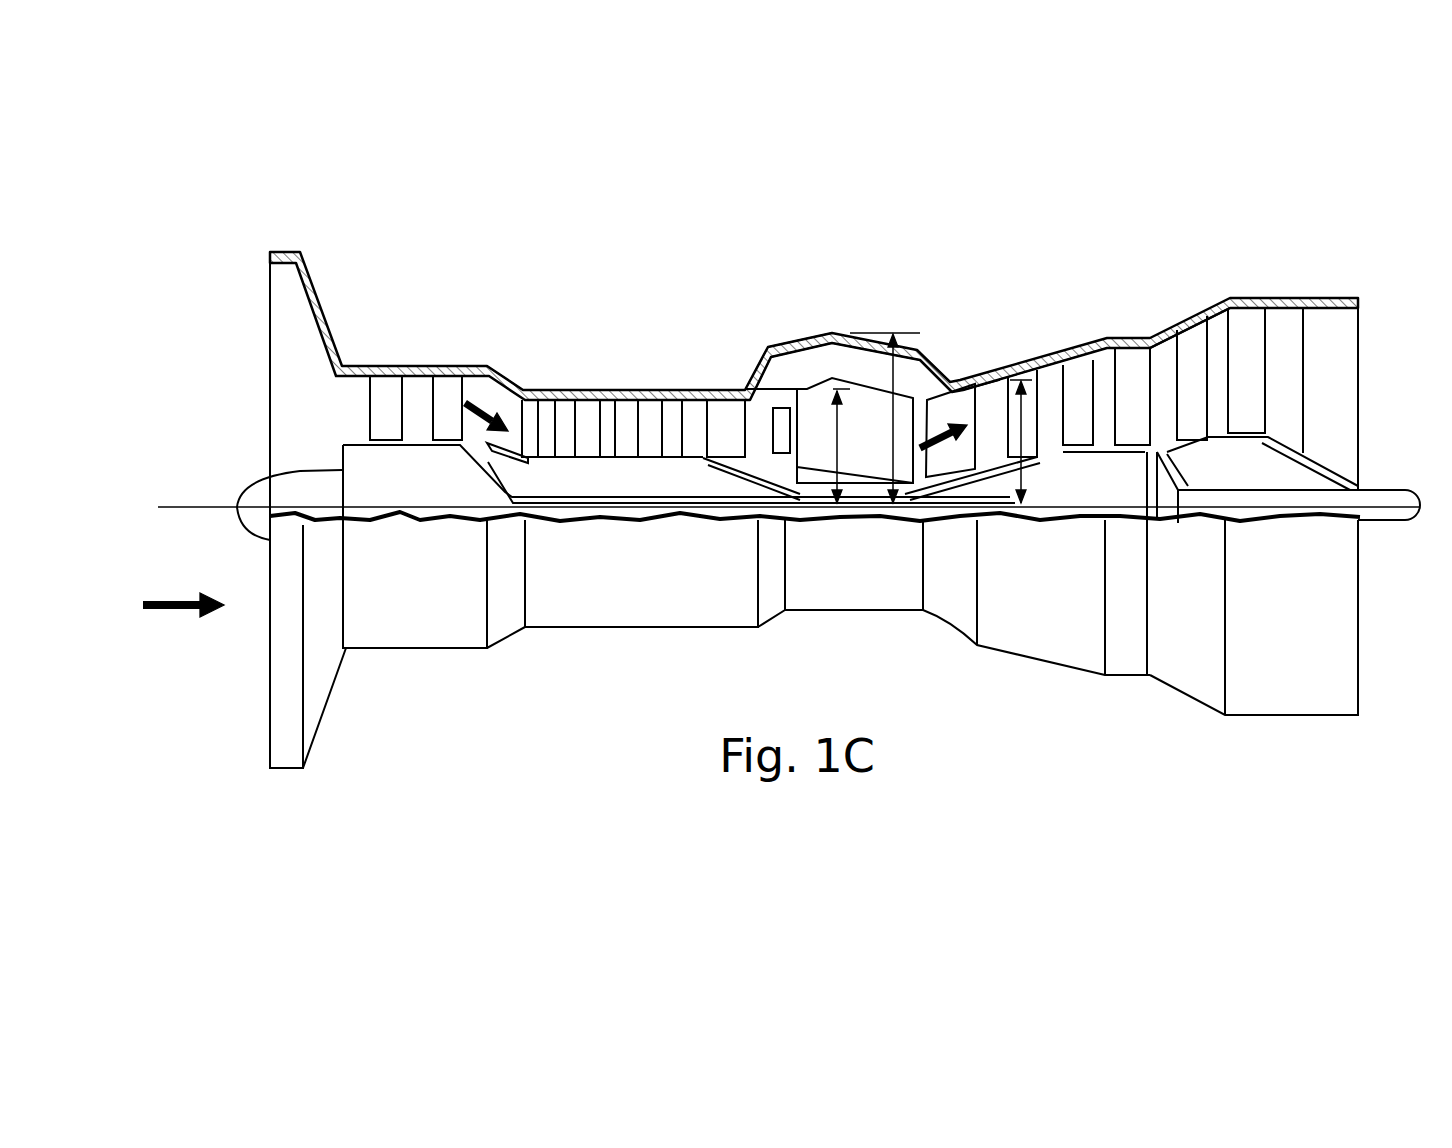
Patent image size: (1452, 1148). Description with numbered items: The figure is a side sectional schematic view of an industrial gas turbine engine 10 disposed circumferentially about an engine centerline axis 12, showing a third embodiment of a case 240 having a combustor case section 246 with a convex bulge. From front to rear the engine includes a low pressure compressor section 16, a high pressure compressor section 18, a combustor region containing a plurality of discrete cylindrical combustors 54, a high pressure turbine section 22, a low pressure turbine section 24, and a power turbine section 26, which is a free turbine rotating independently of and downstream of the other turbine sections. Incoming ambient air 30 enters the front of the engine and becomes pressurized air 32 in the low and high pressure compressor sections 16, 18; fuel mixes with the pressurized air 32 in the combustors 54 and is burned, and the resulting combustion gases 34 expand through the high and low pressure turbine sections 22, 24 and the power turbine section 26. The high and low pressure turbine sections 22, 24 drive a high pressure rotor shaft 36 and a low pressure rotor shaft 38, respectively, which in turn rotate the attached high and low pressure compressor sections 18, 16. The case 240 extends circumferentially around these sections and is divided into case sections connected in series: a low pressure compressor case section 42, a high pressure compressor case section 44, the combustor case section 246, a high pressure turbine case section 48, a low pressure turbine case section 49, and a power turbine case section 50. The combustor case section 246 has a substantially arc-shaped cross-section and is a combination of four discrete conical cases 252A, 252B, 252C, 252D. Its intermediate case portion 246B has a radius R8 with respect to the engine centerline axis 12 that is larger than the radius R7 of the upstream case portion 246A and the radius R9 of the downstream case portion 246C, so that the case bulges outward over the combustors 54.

The gas turbine engine 10 is at (944, 228).
The engine centerline axis 12 is at (201, 505).
The low pressure compressor section 16 is at (411, 356).
The high pressure compressor section 18 is at (663, 362).
The high pressure turbine section 22 is at (1030, 353).
The low pressure turbine section 24 is at (1137, 323).
The power turbine section 26 is at (1299, 291).
The incoming ambient air 30 is at (183, 595).
The pressurized air 32 is at (493, 395).
The combustion gases 34 is at (942, 448).
The high pressure rotor shaft 36 is at (740, 472).
The low pressure rotor shaft 38 is at (500, 484).
The low pressure compressor case section 42 is at (403, 650).
The high pressure compressor case section 44 is at (603, 628).
The high pressure turbine case section 48 is at (1040, 663).
The low pressure turbine case section 49 is at (1128, 680).
The power turbine case section 50 is at (1283, 718).
The discrete cylindrical combustors 54 is at (800, 468).
The case 240 is at (500, 375).
The combustor case section 246 is at (903, 334).
The upstream case portion 246A is at (745, 390).
The intermediate case portion 246B is at (832, 337).
The downstream case portion 246C is at (972, 378).
The conical case 252A is at (757, 355).
The conical case 252B is at (785, 343).
The conical case 252C is at (873, 336).
The conical case 252D is at (936, 357).
The radius of upstream case portion R7 is at (835, 446).
The radius of intermediate case portion R8 is at (885, 418).
The radius of downstream case portion R9 is at (1020, 441).